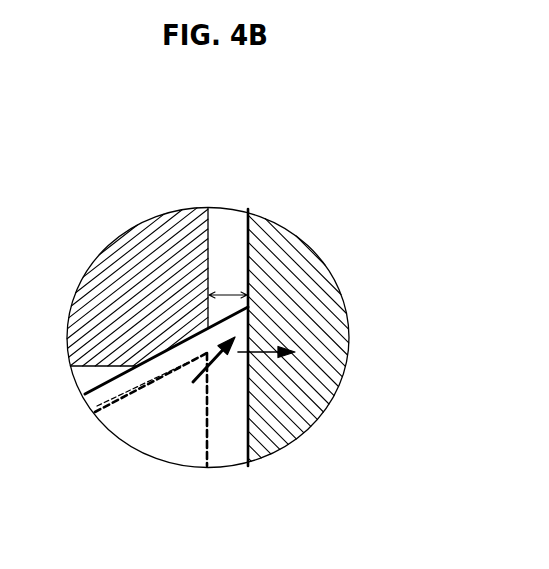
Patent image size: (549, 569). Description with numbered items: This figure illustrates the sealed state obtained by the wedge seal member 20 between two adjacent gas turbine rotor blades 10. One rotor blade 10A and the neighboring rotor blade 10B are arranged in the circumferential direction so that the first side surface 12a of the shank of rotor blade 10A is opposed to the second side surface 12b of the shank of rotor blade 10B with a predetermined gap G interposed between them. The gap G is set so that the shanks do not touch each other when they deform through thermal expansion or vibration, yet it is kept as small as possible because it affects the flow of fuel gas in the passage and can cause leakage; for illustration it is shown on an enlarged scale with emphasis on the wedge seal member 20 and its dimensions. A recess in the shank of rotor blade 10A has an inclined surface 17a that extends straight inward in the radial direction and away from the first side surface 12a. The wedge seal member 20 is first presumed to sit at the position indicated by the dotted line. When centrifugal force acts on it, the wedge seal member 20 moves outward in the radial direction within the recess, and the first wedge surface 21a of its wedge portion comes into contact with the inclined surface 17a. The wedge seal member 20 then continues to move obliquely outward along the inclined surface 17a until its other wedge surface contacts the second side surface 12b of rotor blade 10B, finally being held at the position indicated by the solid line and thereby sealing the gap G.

The rotor blade 10 is at (231, 325).
The rotor blade 10A is at (142, 270).
The rotor blade 10B is at (278, 275).
The first side surface 12a is at (208, 240).
The second side surface 12b is at (242, 240).
The gap G is at (227, 294).
The inclined surface 17a is at (182, 343).
The wedge seal member 20 is at (227, 432).
The first wedge surface 21a is at (97, 406).